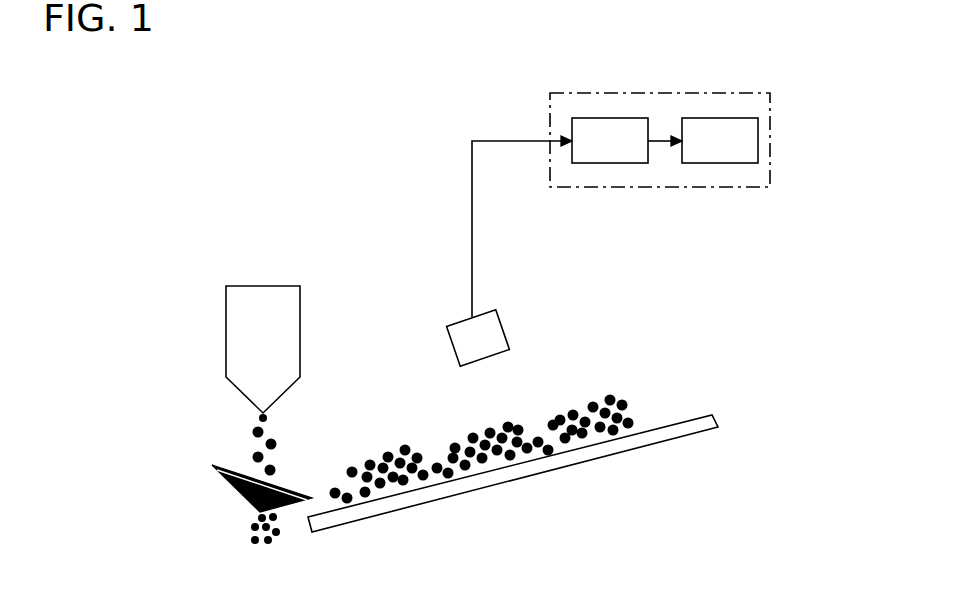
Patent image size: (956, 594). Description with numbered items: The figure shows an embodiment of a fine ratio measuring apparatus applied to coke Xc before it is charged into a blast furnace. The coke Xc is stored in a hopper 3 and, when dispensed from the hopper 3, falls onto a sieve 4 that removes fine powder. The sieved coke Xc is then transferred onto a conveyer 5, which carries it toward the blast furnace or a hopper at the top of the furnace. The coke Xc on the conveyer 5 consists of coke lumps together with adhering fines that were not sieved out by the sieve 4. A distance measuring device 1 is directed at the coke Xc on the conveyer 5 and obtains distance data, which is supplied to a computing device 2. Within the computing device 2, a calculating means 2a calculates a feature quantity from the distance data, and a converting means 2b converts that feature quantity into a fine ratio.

The distance measuring device 1 is at (505, 328).
The computing device 2 is at (783, 121).
The calculating means 2a is at (611, 118).
The converting means 2b is at (731, 118).
The hopper 3 is at (300, 355).
The sieve 4 is at (228, 484).
The conveyer 5 is at (717, 417).
The coke Xc is at (623, 402).